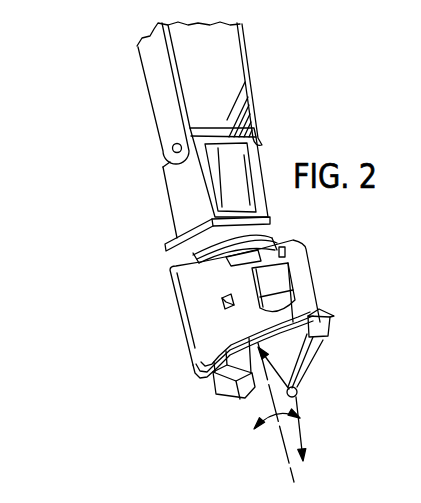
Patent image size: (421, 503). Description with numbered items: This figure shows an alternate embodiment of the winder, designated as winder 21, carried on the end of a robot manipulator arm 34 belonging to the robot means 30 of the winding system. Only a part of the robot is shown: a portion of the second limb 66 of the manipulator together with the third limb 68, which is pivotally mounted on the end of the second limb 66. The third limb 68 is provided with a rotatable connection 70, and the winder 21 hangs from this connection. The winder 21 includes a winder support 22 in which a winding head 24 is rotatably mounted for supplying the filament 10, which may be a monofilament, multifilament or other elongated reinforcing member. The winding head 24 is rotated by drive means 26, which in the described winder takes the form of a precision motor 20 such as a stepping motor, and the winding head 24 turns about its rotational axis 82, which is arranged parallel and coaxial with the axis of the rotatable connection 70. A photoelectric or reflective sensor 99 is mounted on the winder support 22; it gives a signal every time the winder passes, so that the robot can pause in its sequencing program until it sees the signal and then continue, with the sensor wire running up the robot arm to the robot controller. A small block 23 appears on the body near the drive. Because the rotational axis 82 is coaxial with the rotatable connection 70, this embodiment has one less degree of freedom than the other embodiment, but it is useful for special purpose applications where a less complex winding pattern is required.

The filament 10 is at (303, 430).
The precision motor 20 is at (288, 287).
The winder 21 is at (118, 357).
The winder support 22 is at (185, 334).
The stop block 23 is at (330, 311).
The winding head 24 is at (310, 378).
The drive means 26 is at (295, 273).
The robot means 30 is at (140, 153).
The robot manipulator arm 34 is at (157, 67).
The second limb 66 is at (237, 72).
The third limb 68 is at (248, 170).
The rotatable connection 70 is at (180, 263).
The rotational axis 82 is at (283, 447).
The photoelectric or reflective sensor 99 is at (222, 300).